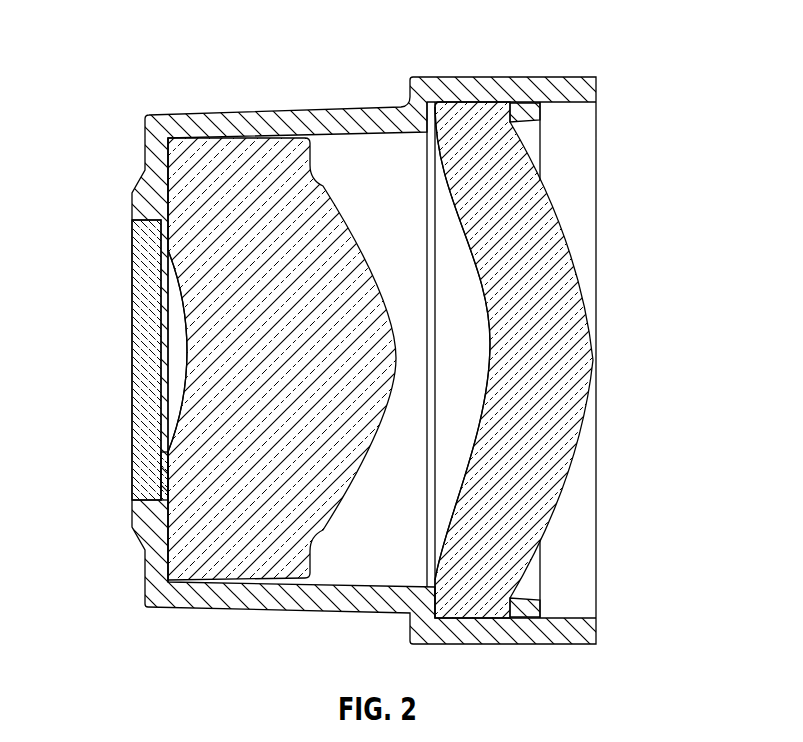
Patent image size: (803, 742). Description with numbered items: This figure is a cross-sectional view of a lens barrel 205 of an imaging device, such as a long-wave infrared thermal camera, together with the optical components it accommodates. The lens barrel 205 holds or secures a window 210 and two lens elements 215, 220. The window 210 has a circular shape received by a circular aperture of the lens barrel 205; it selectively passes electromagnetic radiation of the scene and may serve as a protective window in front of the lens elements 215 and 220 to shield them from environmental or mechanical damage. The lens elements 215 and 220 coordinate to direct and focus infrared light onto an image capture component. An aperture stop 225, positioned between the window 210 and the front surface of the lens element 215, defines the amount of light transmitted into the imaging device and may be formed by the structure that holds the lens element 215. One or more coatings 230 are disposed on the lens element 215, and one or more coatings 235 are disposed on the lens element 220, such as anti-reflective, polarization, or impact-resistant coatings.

The lens barrel 205 is at (532, 76).
The window 210 is at (130, 252).
The lens element 215 is at (227, 152).
The lens element 220 is at (462, 115).
The aperture stop 225 is at (167, 461).
The coatings 230 is at (175, 360).
The coatings 235 is at (470, 293).